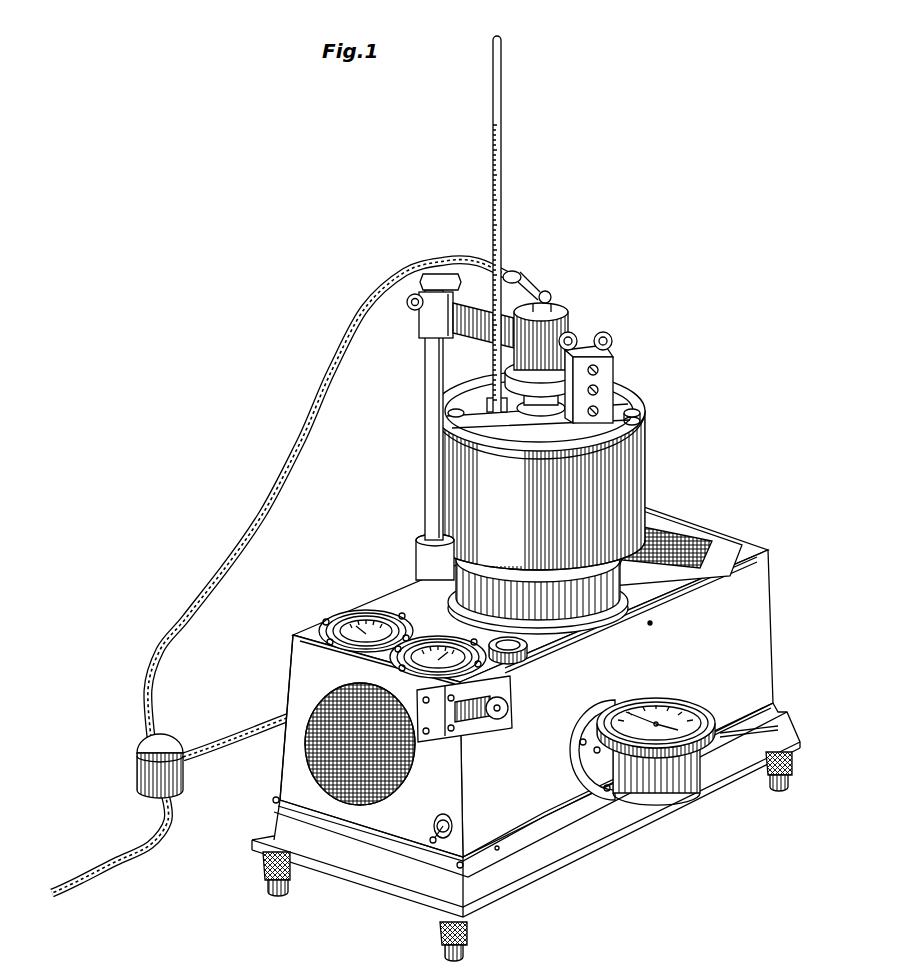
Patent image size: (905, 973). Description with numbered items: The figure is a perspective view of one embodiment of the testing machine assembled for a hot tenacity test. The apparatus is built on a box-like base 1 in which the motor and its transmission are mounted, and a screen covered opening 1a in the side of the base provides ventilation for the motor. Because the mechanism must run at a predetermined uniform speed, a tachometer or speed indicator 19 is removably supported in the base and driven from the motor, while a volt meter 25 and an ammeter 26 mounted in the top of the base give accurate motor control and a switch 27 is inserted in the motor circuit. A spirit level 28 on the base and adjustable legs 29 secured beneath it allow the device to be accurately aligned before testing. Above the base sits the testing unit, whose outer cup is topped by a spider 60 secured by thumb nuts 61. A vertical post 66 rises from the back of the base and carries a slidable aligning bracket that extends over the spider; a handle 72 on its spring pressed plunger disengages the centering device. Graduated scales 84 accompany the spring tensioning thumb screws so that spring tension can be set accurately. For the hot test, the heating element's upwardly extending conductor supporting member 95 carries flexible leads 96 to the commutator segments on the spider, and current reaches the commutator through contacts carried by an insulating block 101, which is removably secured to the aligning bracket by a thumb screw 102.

The box-like base 1 is at (780, 630).
The screen covered opening 1a is at (312, 760).
The tachometer or speed indicator 19 is at (685, 705).
The volt meter 25 is at (362, 616).
The ammeter 26 is at (440, 644).
The switch 27 is at (453, 824).
The spirit level 28 is at (528, 648).
The adjustable legs 29 is at (793, 762).
The spider 60 is at (630, 436).
The thumb nuts 61 is at (641, 413).
The vertical post 66 is at (432, 352).
The handle 72 is at (548, 293).
The graduated scales 84 is at (478, 716).
The conductor supporting member 95 is at (622, 398).
The flexible leads 96 is at (612, 342).
The insulating block 101 is at (566, 320).
The thumb screw 102 is at (578, 341).